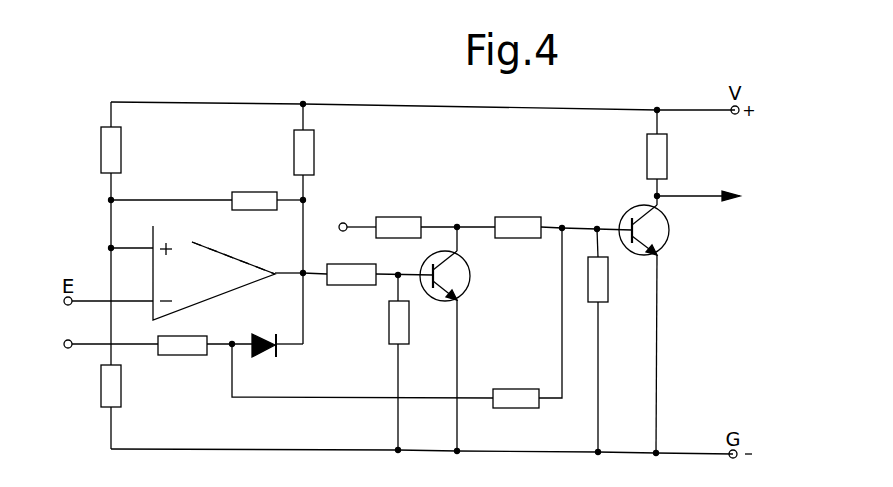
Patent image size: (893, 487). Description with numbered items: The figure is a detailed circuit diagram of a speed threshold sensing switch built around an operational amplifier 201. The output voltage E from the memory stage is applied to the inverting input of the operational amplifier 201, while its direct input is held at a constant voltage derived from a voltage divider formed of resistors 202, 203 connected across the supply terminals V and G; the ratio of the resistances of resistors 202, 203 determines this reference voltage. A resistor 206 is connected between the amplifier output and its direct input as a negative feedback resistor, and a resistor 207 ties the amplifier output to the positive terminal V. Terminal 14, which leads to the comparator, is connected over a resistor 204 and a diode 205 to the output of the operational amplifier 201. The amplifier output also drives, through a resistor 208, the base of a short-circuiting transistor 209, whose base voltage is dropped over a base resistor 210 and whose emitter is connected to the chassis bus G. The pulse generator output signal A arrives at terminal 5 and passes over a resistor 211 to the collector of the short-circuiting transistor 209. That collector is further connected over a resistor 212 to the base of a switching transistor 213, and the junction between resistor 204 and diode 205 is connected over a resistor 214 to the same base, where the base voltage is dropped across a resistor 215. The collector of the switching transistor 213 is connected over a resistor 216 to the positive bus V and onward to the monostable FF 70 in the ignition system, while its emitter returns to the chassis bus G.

The operational amplifier 201 is at (183, 287).
The resistor 202 is at (101, 153).
The resistor 203 is at (101, 382).
The resistor 204 is at (185, 356).
The diode 205 is at (261, 337).
The negative feedback resistor 206 is at (255, 192).
The resistor 207 is at (316, 156).
The resistor 208 is at (350, 286).
The short-circuiting transistor 209 is at (469, 291).
The base resistor 210 is at (388, 333).
The resistor 211 is at (387, 216).
The resistor 212 is at (563, 211).
The switching transistor 213 is at (669, 239).
The resistor 214 is at (511, 389).
The resistor 215 is at (608, 288).
The resistor 216 is at (647, 158).
The terminal 5 is at (339, 227).
The terminal 14 is at (109, 330).
The monostable FF 70 is at (714, 196).